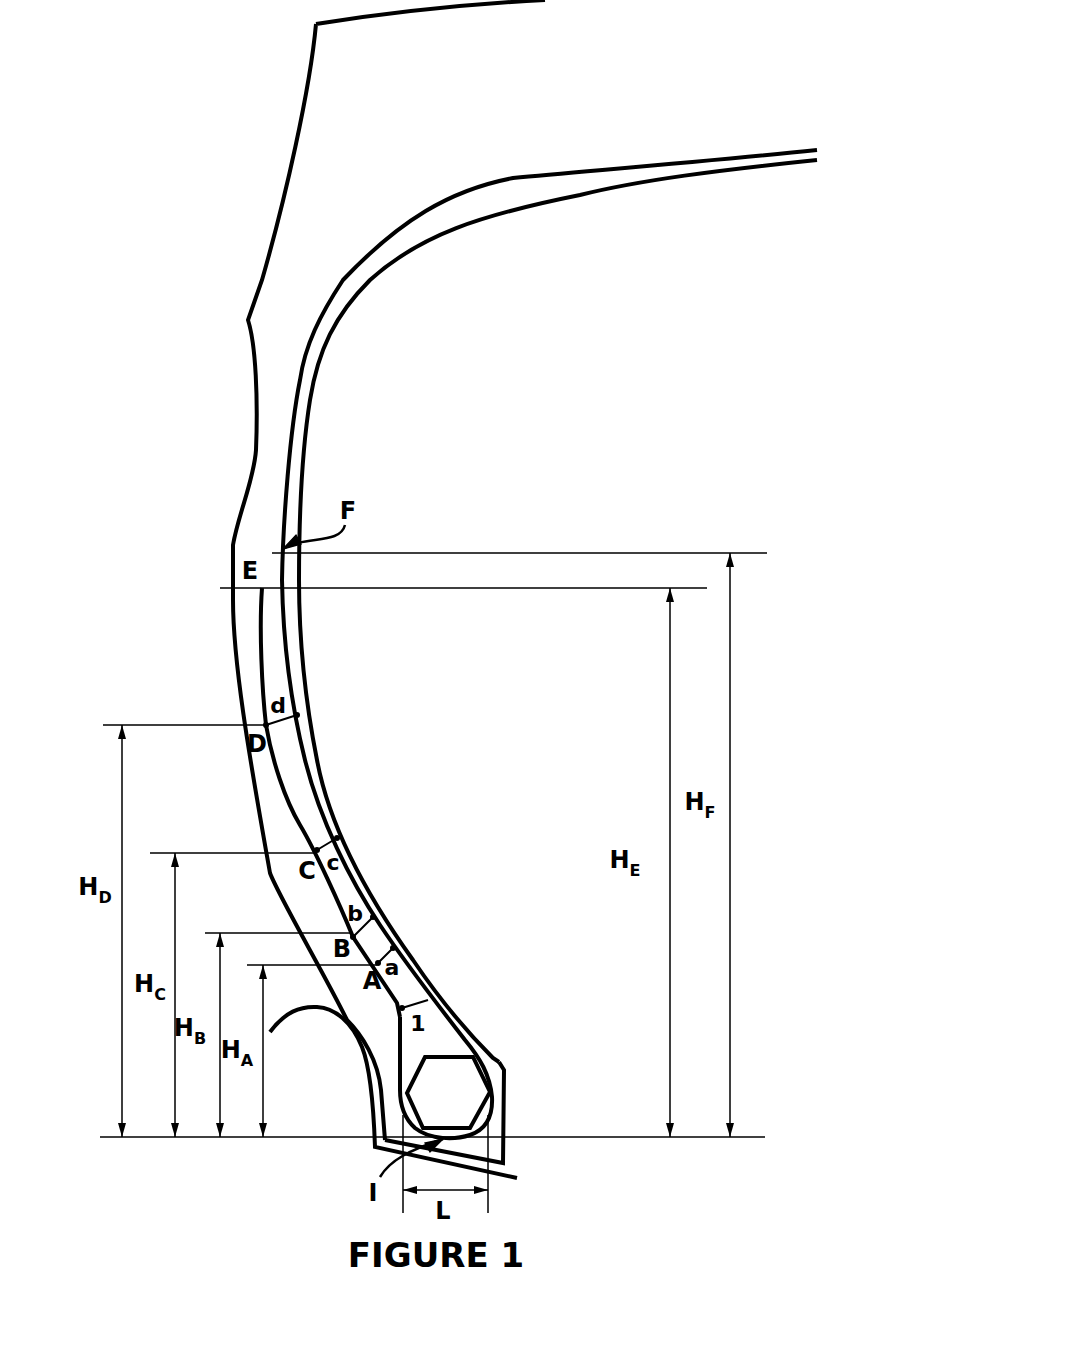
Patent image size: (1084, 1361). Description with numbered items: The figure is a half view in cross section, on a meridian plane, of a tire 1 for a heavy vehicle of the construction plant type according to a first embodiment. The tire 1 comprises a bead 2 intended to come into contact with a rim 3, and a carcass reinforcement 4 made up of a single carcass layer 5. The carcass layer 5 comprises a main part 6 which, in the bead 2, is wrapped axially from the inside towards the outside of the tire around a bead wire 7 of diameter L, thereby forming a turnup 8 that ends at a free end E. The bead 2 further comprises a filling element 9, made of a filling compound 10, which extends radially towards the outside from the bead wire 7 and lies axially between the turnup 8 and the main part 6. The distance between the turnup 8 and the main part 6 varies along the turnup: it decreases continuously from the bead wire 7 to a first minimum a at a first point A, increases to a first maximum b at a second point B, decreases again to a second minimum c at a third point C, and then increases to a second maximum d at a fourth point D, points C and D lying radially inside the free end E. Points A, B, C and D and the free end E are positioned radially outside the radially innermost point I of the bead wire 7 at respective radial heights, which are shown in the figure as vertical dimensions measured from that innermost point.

The tire 1 is at (283, 85).
The bead 2 is at (508, 1045).
The rim 3 is at (325, 1017).
The carcass reinforcement 4 is at (383, 247).
The carcass layer 5 is at (307, 368).
The main part 6 is at (297, 692).
The bead wire 7 is at (462, 1080).
The turnup 8 is at (288, 807).
The filling element 9 is at (428, 1002).
The filling compound 10 is at (443, 1042).